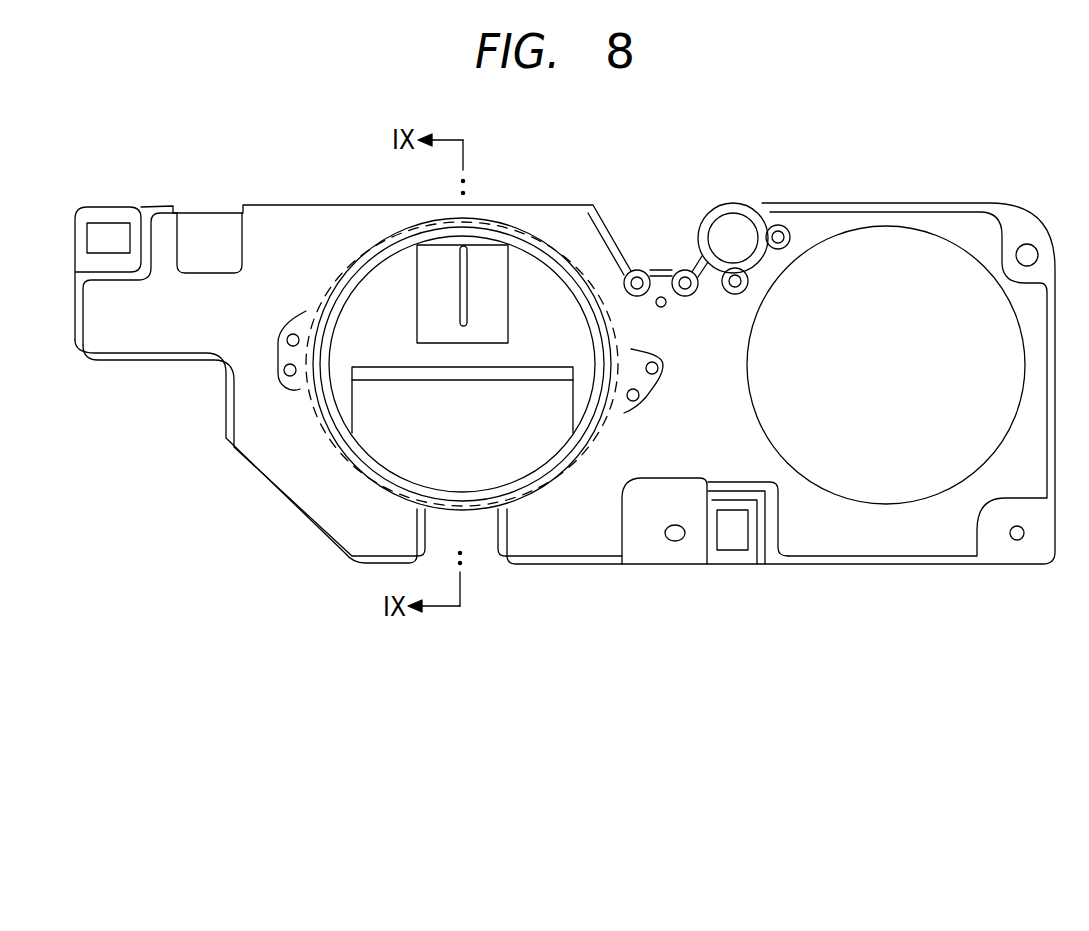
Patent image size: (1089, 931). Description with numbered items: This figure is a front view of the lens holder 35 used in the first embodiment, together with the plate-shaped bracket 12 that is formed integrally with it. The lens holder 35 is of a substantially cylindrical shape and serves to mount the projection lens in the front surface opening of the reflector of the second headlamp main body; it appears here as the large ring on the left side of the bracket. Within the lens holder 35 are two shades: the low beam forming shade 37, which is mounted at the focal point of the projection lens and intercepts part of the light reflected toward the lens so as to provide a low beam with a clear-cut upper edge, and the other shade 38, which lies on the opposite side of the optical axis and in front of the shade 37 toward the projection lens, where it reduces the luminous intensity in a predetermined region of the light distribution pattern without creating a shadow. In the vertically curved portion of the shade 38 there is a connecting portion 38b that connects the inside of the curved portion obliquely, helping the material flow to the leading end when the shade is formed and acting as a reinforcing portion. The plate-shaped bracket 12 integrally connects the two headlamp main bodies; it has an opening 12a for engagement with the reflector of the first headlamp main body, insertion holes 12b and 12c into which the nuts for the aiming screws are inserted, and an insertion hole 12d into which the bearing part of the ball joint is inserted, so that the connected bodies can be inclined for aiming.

The plate-shaped bracket 12 is at (575, 206).
The opening for engagement 12a is at (907, 237).
The insertion hole 12b is at (127, 244).
The insertion hole 12c is at (722, 527).
The insertion hole 12d is at (717, 228).
The lens holder 35 is at (373, 228).
The shade 37 is at (477, 480).
The shade 38 is at (493, 282).
The connecting portion 38b is at (467, 258).